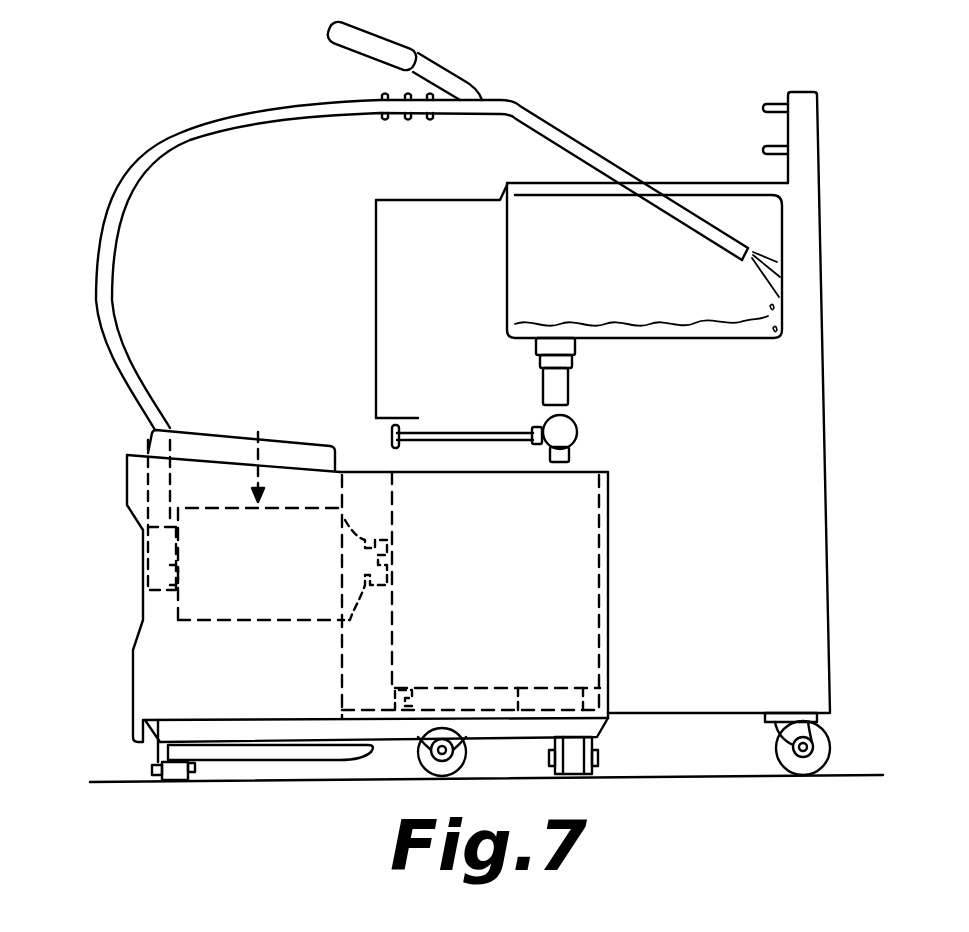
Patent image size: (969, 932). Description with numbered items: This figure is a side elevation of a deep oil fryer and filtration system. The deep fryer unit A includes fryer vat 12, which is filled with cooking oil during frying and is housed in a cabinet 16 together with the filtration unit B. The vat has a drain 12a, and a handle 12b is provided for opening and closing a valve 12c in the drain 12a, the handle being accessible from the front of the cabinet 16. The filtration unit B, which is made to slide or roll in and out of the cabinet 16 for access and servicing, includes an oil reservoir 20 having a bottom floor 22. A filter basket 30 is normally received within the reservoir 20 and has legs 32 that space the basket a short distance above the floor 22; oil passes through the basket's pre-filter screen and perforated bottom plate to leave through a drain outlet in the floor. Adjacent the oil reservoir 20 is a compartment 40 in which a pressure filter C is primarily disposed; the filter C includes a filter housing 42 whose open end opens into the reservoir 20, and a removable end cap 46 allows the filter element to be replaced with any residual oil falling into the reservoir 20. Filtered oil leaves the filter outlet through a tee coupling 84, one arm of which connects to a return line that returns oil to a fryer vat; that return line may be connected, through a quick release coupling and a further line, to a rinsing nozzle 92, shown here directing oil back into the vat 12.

The fryer vat 12 is at (648, 283).
The vat drain 12a is at (574, 412).
The handle 12b is at (390, 446).
The valve 12c is at (580, 438).
The cabinet 16 is at (376, 277).
The oil reservoir 20 is at (516, 583).
The bottom floor 22 is at (520, 688).
The filter basket 30 is at (395, 654).
The legs 32 is at (422, 690).
The compartment 40 is at (278, 691).
The filter housing 42 is at (278, 620).
The removable end cap 46 is at (357, 526).
The coupling 84 is at (176, 592).
The rinsing nozzle 92 is at (565, 142).
The deep fryer unit A is at (692, 163).
The filtration unit B is at (124, 515).
The pressure filter C is at (262, 432).